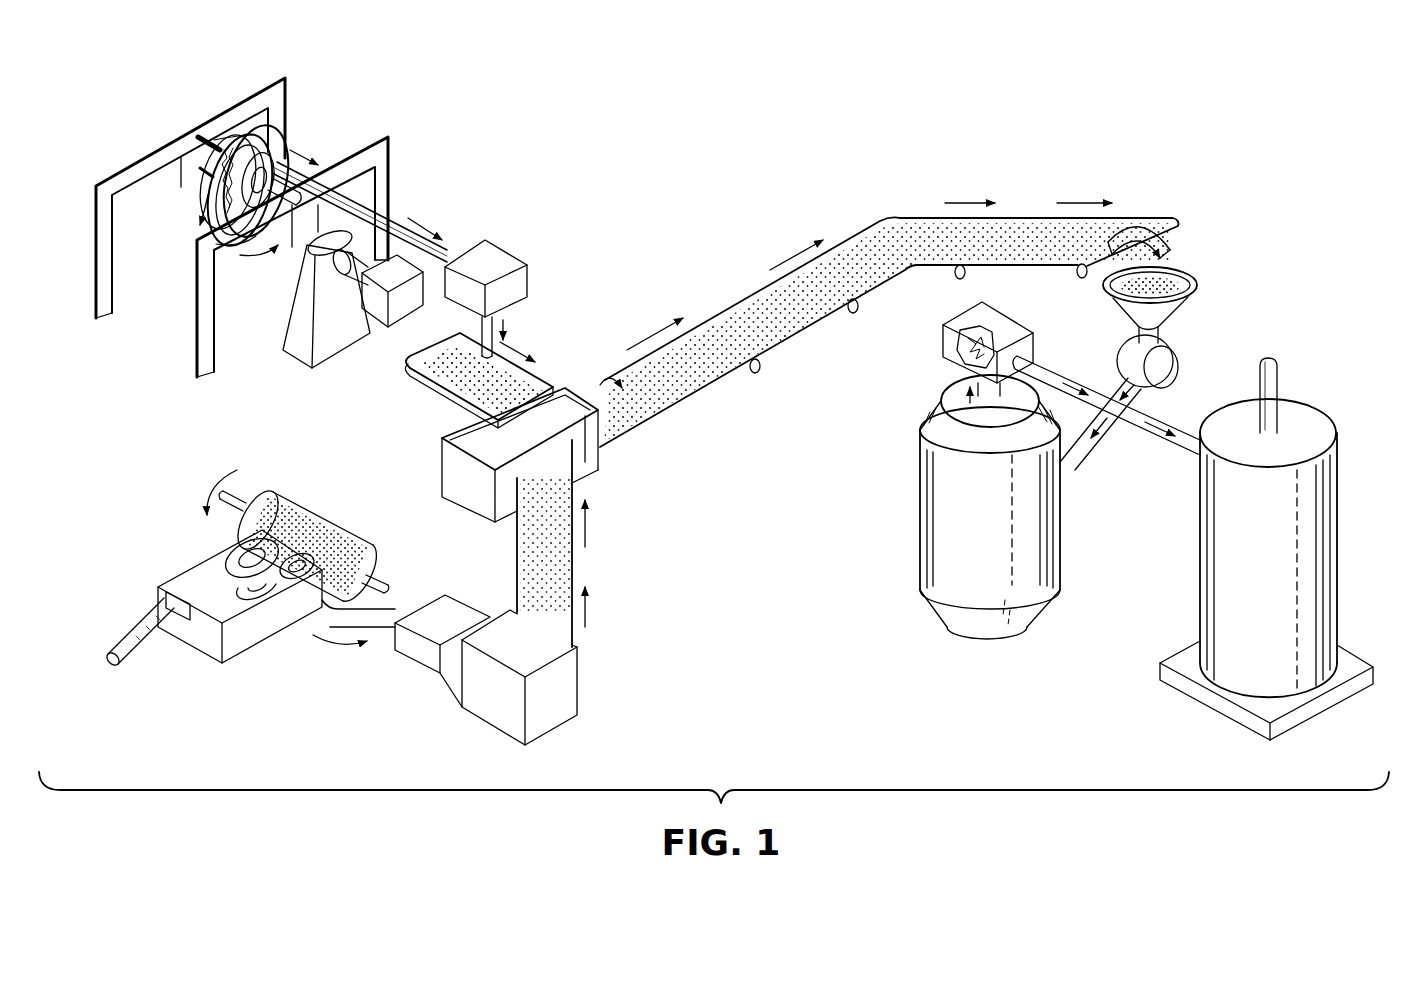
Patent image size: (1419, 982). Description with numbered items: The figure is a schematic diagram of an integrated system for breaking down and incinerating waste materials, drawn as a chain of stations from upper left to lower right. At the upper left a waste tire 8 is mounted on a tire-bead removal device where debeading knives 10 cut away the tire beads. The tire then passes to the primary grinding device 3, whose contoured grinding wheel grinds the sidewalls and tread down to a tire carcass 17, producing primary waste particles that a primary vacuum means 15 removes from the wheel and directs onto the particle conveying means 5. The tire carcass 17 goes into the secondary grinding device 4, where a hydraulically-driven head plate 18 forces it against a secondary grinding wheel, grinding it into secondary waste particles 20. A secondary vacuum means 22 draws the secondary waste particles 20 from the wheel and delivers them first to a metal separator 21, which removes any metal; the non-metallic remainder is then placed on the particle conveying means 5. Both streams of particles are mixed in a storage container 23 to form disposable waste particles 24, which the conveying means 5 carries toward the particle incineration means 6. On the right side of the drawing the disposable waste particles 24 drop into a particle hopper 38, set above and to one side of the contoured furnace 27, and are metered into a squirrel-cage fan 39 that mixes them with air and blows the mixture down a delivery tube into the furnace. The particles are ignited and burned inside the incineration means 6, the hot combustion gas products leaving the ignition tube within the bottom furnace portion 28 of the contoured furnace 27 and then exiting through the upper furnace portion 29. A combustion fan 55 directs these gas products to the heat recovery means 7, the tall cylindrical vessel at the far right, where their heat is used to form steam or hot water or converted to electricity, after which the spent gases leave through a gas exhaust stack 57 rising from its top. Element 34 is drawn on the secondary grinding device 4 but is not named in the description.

The primary grinding device 3 is at (283, 148).
The secondary grinding device 4 is at (287, 493).
The particle conveying means 5 is at (437, 382).
The particle incineration means 6 is at (948, 527).
The heat recovery means 7 is at (1266, 555).
The waste tire 8 is at (213, 230).
The debeading knives 10 is at (200, 177).
The primary vacuum means 15 is at (503, 262).
The tire carcass 17 is at (230, 560).
The hydraulically-driven head plate 18 is at (180, 613).
The secondary waste particles 20 is at (553, 497).
The metal separator 21 is at (557, 692).
The secondary vacuum means 22 is at (423, 655).
The storage container 23 is at (598, 450).
The disposable waste particles 24 is at (563, 393).
The contoured furnace 27 is at (908, 508).
The bottom furnace portion 28 is at (935, 632).
The upper furnace portion 29 is at (928, 392).
The block 34 is at (235, 642).
The particle hopper 38 is at (1165, 305).
The squirrel-cage fan 39 is at (1162, 360).
The combustion fan 55 is at (973, 313).
The gas exhaust stack 57 is at (1278, 380).